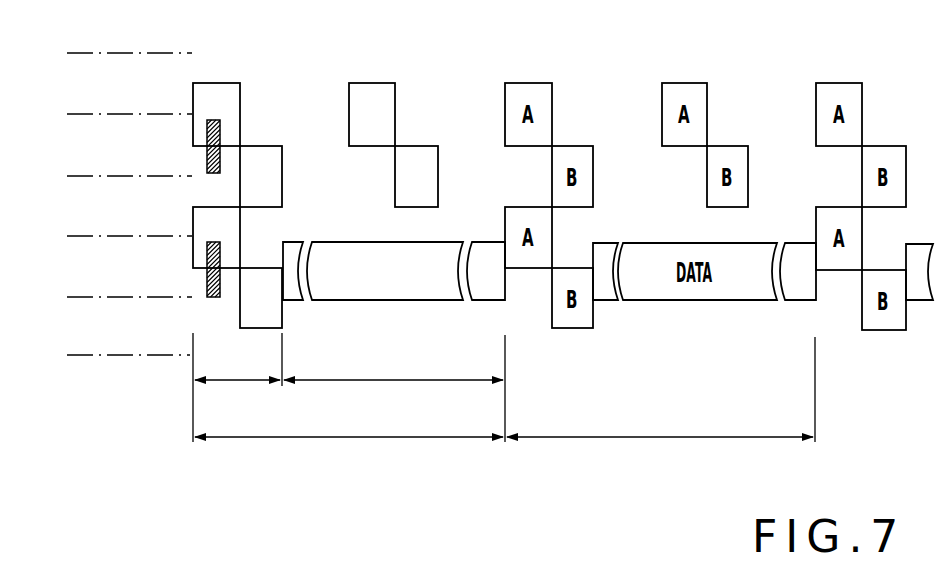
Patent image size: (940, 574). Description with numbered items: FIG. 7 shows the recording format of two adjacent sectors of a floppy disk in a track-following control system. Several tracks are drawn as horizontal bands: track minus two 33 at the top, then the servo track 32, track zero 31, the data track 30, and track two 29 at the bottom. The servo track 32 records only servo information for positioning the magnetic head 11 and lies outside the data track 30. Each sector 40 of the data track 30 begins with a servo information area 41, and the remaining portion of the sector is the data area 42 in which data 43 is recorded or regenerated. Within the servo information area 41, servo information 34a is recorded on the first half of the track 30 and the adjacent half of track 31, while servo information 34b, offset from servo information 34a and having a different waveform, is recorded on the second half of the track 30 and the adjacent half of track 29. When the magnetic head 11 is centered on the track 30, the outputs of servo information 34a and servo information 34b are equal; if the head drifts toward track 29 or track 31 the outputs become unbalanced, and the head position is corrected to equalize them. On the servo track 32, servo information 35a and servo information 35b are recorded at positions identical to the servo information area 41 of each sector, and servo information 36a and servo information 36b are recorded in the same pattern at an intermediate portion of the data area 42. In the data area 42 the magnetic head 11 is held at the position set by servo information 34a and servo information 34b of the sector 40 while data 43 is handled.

The track (-2) 33 is at (73, 83).
The servo track 32 is at (73, 148).
The track (0) 31 is at (73, 206).
The data track 30 is at (73, 268).
The track (2) 29 is at (73, 328).
The servo information 35a is at (228, 83).
The servo information 35b is at (271, 146).
The servo information 36a is at (383, 83).
The servo information 36b is at (429, 146).
The servo information 34a is at (193, 243).
The servo information 34b is at (270, 262).
The magnetic head 11 is at (207, 160).
The data 43 is at (358, 300).
The servo information area 41 is at (242, 381).
The data area 42 is at (388, 381).
The sector 40 is at (358, 438).